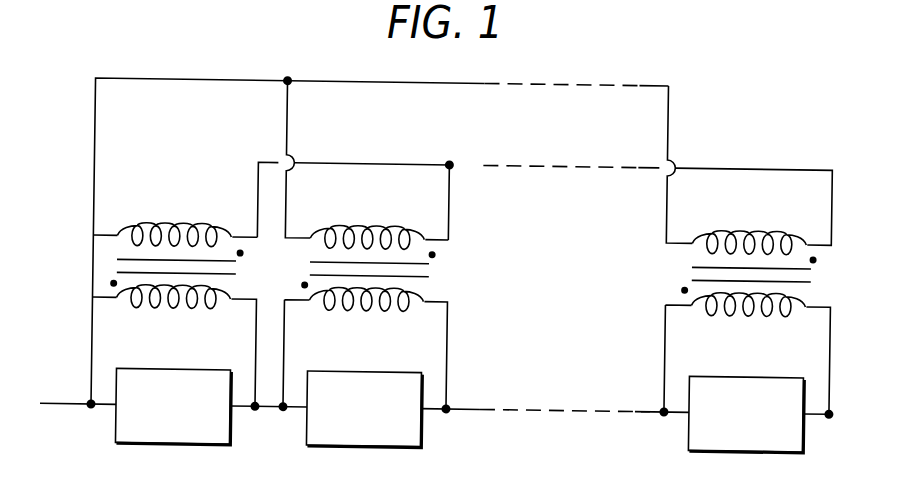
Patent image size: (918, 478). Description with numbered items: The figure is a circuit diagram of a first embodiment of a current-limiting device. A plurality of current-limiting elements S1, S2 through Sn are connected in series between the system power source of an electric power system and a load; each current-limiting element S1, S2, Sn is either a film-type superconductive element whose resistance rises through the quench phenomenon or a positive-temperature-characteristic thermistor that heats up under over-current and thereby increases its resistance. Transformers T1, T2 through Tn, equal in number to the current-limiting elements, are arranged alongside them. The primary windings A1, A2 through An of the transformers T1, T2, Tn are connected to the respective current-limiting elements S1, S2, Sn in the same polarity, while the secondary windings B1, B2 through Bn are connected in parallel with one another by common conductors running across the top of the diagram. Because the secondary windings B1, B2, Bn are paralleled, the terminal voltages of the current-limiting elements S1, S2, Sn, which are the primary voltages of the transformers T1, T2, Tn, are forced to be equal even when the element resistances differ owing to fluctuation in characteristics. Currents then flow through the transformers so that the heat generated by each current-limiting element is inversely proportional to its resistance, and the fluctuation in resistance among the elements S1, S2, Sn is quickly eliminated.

The transformer T1 is at (151, 268).
The transformer T2 is at (387, 269).
The transformer Tn is at (725, 275).
The secondary winding B1 is at (174, 218).
The secondary winding B2 is at (367, 222).
The secondary winding Bn is at (749, 227).
The primary winding A1 is at (173, 312).
The primary winding A2 is at (366, 315).
The primary winding An is at (748, 319).
The current-limiting element S1 is at (173, 406).
The current-limiting element S2 is at (364, 409).
The current-limiting element Sn is at (746, 414).